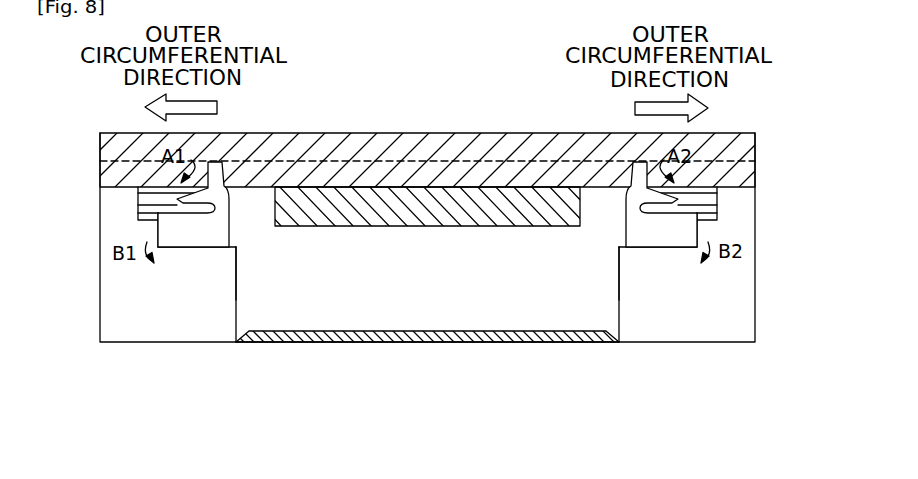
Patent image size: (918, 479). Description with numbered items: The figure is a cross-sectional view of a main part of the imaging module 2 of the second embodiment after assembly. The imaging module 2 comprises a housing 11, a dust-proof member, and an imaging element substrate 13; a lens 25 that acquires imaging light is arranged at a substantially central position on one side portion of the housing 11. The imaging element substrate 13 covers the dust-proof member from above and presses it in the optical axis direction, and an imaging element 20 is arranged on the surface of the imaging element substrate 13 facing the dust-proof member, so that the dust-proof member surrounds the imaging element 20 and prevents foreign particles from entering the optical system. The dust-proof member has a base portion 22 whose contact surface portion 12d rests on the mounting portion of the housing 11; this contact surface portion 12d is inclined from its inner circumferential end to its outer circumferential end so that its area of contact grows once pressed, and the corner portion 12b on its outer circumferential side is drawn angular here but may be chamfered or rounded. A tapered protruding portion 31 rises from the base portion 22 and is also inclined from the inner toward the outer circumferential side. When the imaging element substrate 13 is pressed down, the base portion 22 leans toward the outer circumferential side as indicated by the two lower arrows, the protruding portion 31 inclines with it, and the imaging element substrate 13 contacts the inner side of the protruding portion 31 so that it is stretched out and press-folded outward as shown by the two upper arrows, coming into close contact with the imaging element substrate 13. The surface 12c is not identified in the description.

The imaging module 2 is at (760, 82).
The housing 11 is at (456, 291).
The corner portion 12b is at (163, 253).
The groove inner side surface 12c is at (232, 244).
The contact surface portion 12d is at (180, 253).
The imaging element substrate 13 is at (462, 148).
The imaging element 20 is at (368, 205).
The base portion 22 is at (428, 239).
The lens 25 is at (448, 342).
The protruding portion 31 is at (213, 162).